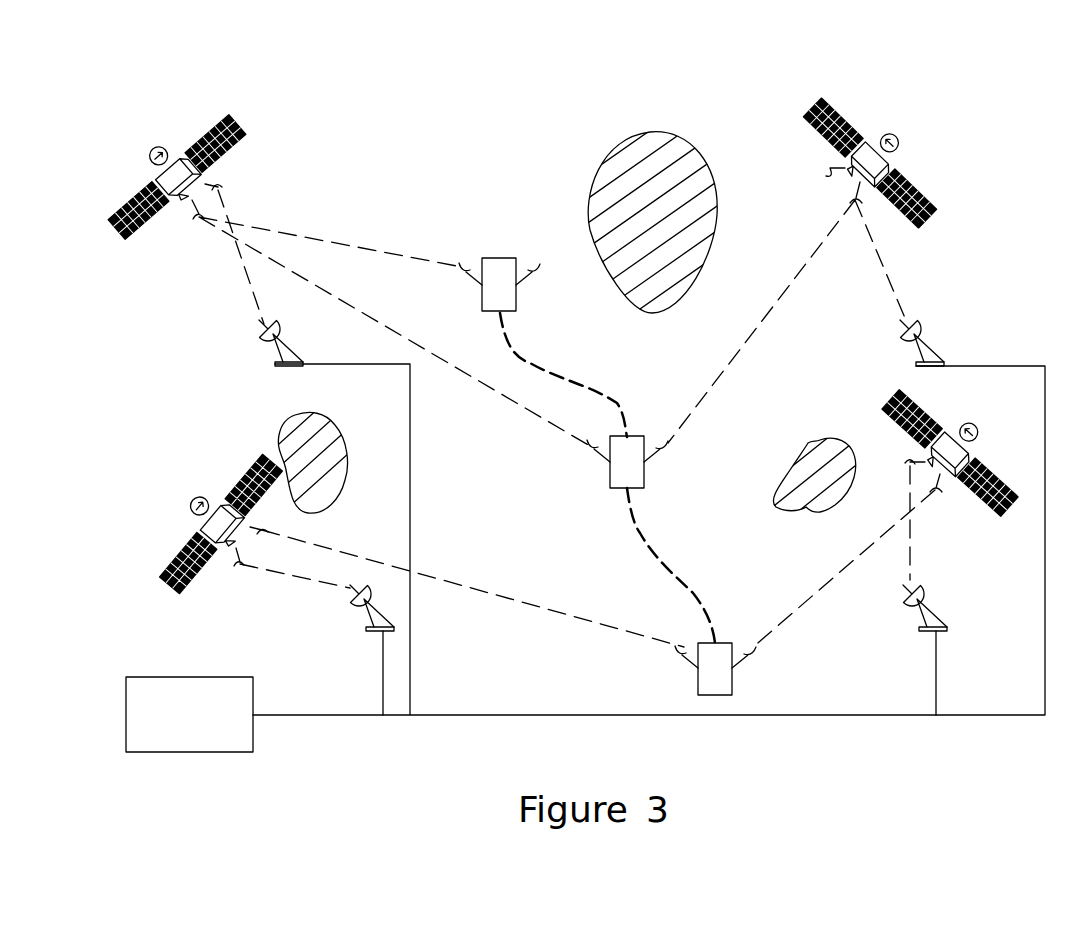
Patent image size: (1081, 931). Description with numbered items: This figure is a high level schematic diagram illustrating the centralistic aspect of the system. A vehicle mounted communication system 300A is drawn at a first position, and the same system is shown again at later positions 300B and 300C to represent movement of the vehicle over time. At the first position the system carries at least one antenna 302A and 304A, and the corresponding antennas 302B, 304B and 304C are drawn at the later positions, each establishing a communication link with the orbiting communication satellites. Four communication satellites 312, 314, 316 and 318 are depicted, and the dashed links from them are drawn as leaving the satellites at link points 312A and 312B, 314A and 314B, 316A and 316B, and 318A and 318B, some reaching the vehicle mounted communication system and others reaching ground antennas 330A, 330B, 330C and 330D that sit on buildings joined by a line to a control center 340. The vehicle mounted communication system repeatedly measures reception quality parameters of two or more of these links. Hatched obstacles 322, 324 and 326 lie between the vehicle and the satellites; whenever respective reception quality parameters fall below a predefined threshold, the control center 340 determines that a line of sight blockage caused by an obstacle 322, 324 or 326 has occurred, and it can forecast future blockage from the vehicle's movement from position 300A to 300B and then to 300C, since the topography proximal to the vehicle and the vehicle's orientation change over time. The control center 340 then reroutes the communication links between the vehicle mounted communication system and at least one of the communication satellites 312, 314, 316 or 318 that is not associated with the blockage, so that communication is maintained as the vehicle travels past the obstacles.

The vehicle mounted communication system 300A is at (698, 648).
The vehicle mounted communication system 300B is at (610, 462).
The vehicle mounted communication system 300C is at (500, 258).
The antenna 302A is at (462, 272).
The first antenna of node 302B is at (610, 474).
The antenna 304A is at (752, 648).
The second antenna of node 304B is at (660, 452).
The second antenna of node 304C is at (535, 264).
The communication satellite 312 is at (892, 163).
The satellite antenna 312A is at (826, 168).
The satellite antenna 312B is at (860, 200).
The communication satellite 314 is at (962, 452).
The satellite antenna 314A is at (910, 462).
The satellite antenna 314B is at (936, 490).
The communication satellite 316 is at (160, 180).
The satellite antenna 316A is at (225, 182).
The satellite antenna 316B is at (198, 215).
The communication satellite 318 is at (200, 528).
The satellite antenna 318A is at (240, 568).
The satellite antenna 318B is at (262, 530).
The obstacle 322 is at (826, 440).
The obstacle 324 is at (680, 134).
The obstacle 326 is at (292, 416).
The ground antenna 330A is at (922, 323).
The ground antenna 330B is at (905, 598).
The ground antenna 330C is at (352, 605).
The ground antenna 330D is at (258, 332).
The control center 340 is at (195, 677).